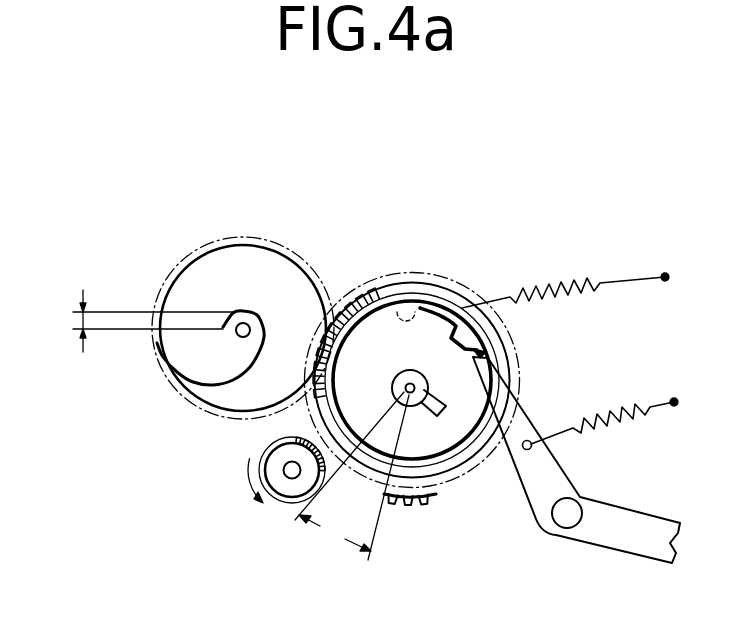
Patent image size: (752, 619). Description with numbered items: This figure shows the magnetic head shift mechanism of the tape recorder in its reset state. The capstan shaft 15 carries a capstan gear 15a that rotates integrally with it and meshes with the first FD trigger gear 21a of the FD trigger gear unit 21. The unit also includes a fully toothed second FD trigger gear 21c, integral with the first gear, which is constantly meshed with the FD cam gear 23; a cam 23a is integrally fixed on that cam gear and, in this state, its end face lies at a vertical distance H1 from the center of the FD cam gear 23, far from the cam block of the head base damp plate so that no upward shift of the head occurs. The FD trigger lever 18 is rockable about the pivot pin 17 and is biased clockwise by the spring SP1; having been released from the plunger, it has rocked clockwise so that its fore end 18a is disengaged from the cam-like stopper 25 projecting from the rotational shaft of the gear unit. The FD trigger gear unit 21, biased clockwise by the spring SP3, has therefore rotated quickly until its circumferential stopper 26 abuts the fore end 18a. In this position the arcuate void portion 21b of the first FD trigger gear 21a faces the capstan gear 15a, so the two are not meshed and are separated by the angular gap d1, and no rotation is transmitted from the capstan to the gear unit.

The FD cam gear 23 is at (301, 258).
The cam 23a is at (201, 360).
The vertical distance H1 is at (134, 321).
The FD trigger gear unit 21 is at (428, 330).
The first FD trigger gear 21a is at (438, 504).
The void portion 21b is at (385, 504).
The second FD trigger gear 21c is at (388, 294).
The cam-like stopper 25 is at (446, 408).
The angular gap d1 is at (352, 476).
The stopper 26 is at (462, 337).
The fore end 18a is at (479, 351).
The pivot pin 17 is at (567, 505).
The FD trigger lever 18 is at (650, 519).
The spring SP3 is at (568, 283).
The spring SP1 is at (620, 408).
The capstan shaft 15 is at (283, 472).
The capstan gear 15a is at (272, 499).